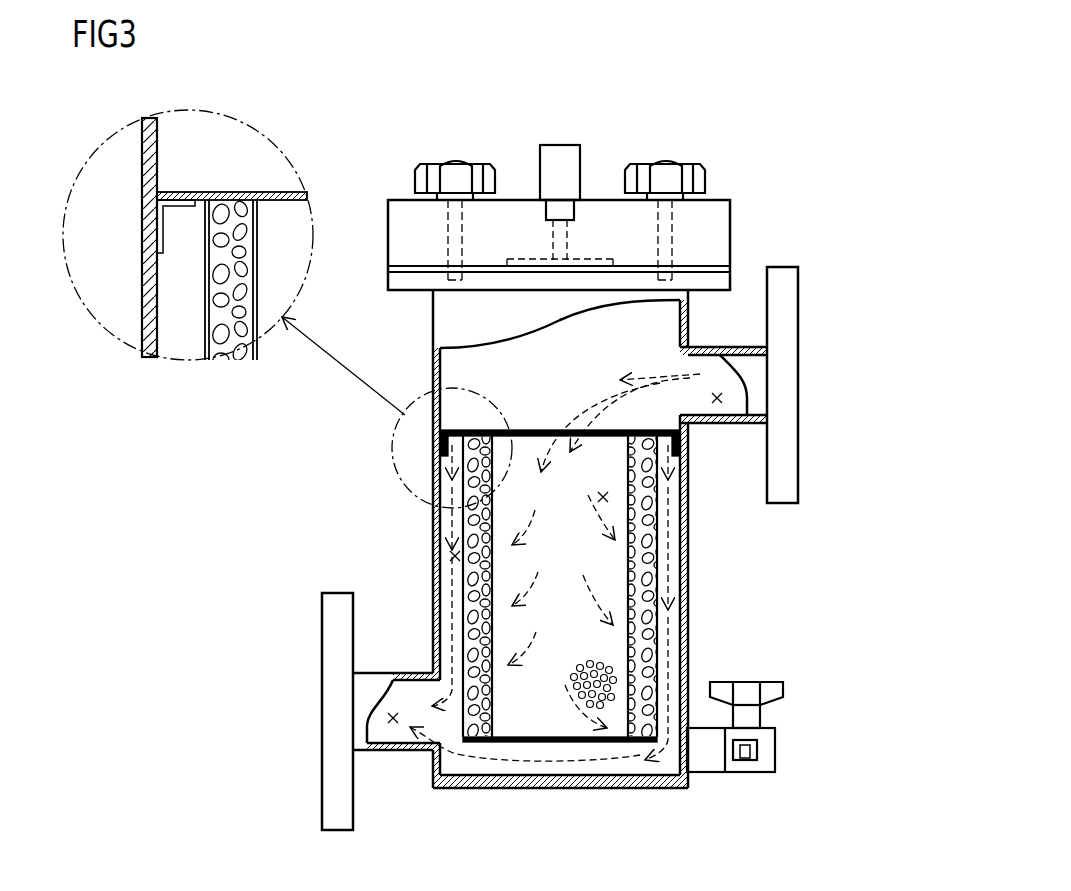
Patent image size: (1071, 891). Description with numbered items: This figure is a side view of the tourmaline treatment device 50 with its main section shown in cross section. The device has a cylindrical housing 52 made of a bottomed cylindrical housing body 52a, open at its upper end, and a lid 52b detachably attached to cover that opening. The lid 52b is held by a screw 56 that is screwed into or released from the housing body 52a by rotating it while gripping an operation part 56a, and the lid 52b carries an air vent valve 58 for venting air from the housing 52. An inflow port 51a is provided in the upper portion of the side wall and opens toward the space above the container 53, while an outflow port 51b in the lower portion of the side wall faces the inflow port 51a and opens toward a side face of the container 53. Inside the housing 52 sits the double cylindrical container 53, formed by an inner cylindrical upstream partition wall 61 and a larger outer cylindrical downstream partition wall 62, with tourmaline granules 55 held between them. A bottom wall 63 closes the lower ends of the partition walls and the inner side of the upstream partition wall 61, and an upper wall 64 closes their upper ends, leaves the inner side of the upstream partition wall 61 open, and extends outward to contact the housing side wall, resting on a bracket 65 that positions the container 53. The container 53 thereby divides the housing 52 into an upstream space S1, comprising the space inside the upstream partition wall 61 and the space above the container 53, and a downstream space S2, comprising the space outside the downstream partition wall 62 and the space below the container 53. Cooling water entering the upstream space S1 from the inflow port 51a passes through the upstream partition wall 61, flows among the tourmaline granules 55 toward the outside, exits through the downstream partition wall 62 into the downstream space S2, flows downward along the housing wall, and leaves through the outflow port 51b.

The tourmaline treatment device 50 is at (805, 183).
The inflow port 51a is at (720, 398).
The outflow port 51b is at (393, 720).
The housing 52 is at (128, 282).
The housing body 52a is at (150, 325).
The lid 52b is at (730, 240).
The container 53 is at (197, 317).
The tourmaline granules 55 is at (243, 318).
The screw 56 is at (445, 238).
The operation part 56a is at (455, 180).
The air vent valve 58 is at (560, 162).
The upstream partition wall 61 is at (257, 325).
The downstream partition wall 62 is at (205, 360).
The bottom wall 63 is at (560, 742).
The upper wall 64 is at (213, 192).
The bracket 65 is at (157, 227).
The upstream space S1 is at (606, 498).
The downstream space S2 is at (455, 556).